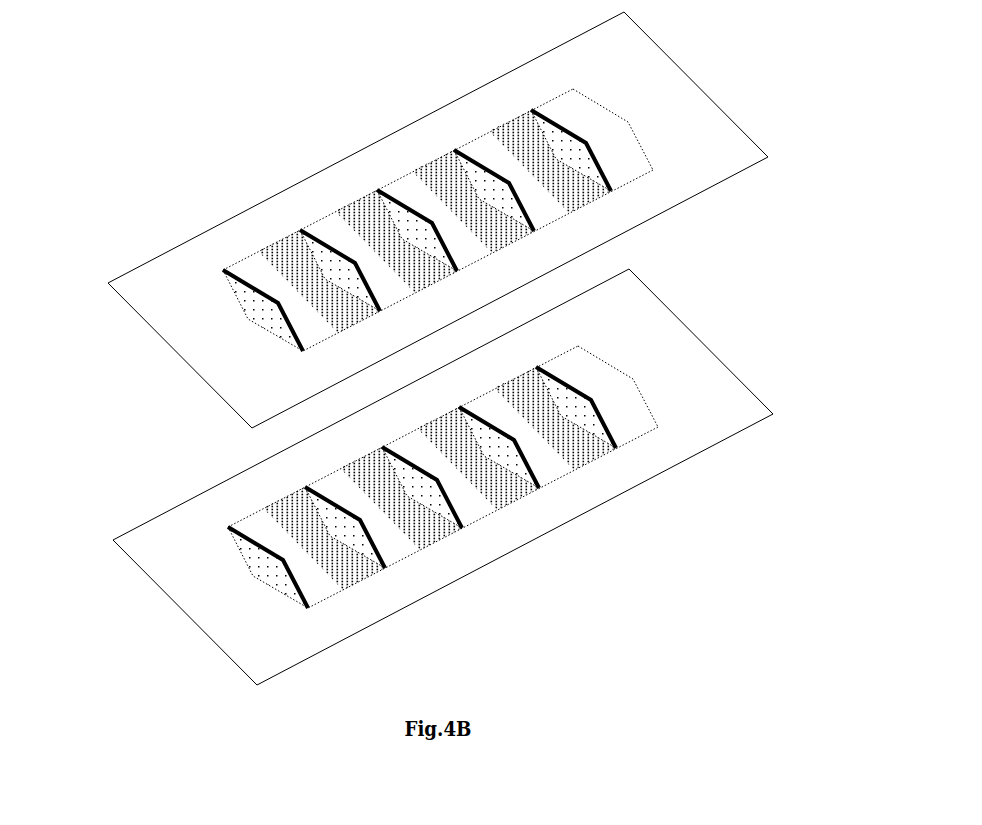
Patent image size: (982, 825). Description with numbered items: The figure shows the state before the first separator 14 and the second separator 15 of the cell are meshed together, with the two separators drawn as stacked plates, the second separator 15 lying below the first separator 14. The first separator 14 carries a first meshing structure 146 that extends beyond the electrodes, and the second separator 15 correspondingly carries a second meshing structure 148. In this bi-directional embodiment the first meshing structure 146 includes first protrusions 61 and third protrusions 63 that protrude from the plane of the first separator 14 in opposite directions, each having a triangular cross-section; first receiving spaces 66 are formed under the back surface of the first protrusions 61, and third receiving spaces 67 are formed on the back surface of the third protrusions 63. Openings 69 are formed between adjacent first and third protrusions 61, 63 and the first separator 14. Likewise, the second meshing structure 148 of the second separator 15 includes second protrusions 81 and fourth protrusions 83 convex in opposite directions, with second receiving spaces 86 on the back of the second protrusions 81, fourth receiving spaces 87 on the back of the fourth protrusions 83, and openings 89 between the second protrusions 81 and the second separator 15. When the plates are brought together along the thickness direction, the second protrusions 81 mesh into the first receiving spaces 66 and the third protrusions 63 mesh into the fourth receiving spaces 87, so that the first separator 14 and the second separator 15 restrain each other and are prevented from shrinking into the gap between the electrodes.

The first separator 14 is at (183, 258).
The second separator 15 is at (175, 522).
The first protrusions 61 is at (492, 150).
The third protrusions 63 is at (580, 183).
The first receiving spaces 66 is at (434, 160).
The third receiving spaces 67 is at (529, 107).
The openings 69 is at (353, 197).
The first meshing structure 146 is at (565, 105).
The second protrusions 81 is at (545, 452).
The fourth protrusions 83 is at (530, 380).
The second receiving spaces 86 is at (513, 498).
The fourth receiving spaces 87 is at (572, 425).
The openings 89 is at (430, 490).
The second meshing structure 148 is at (622, 405).